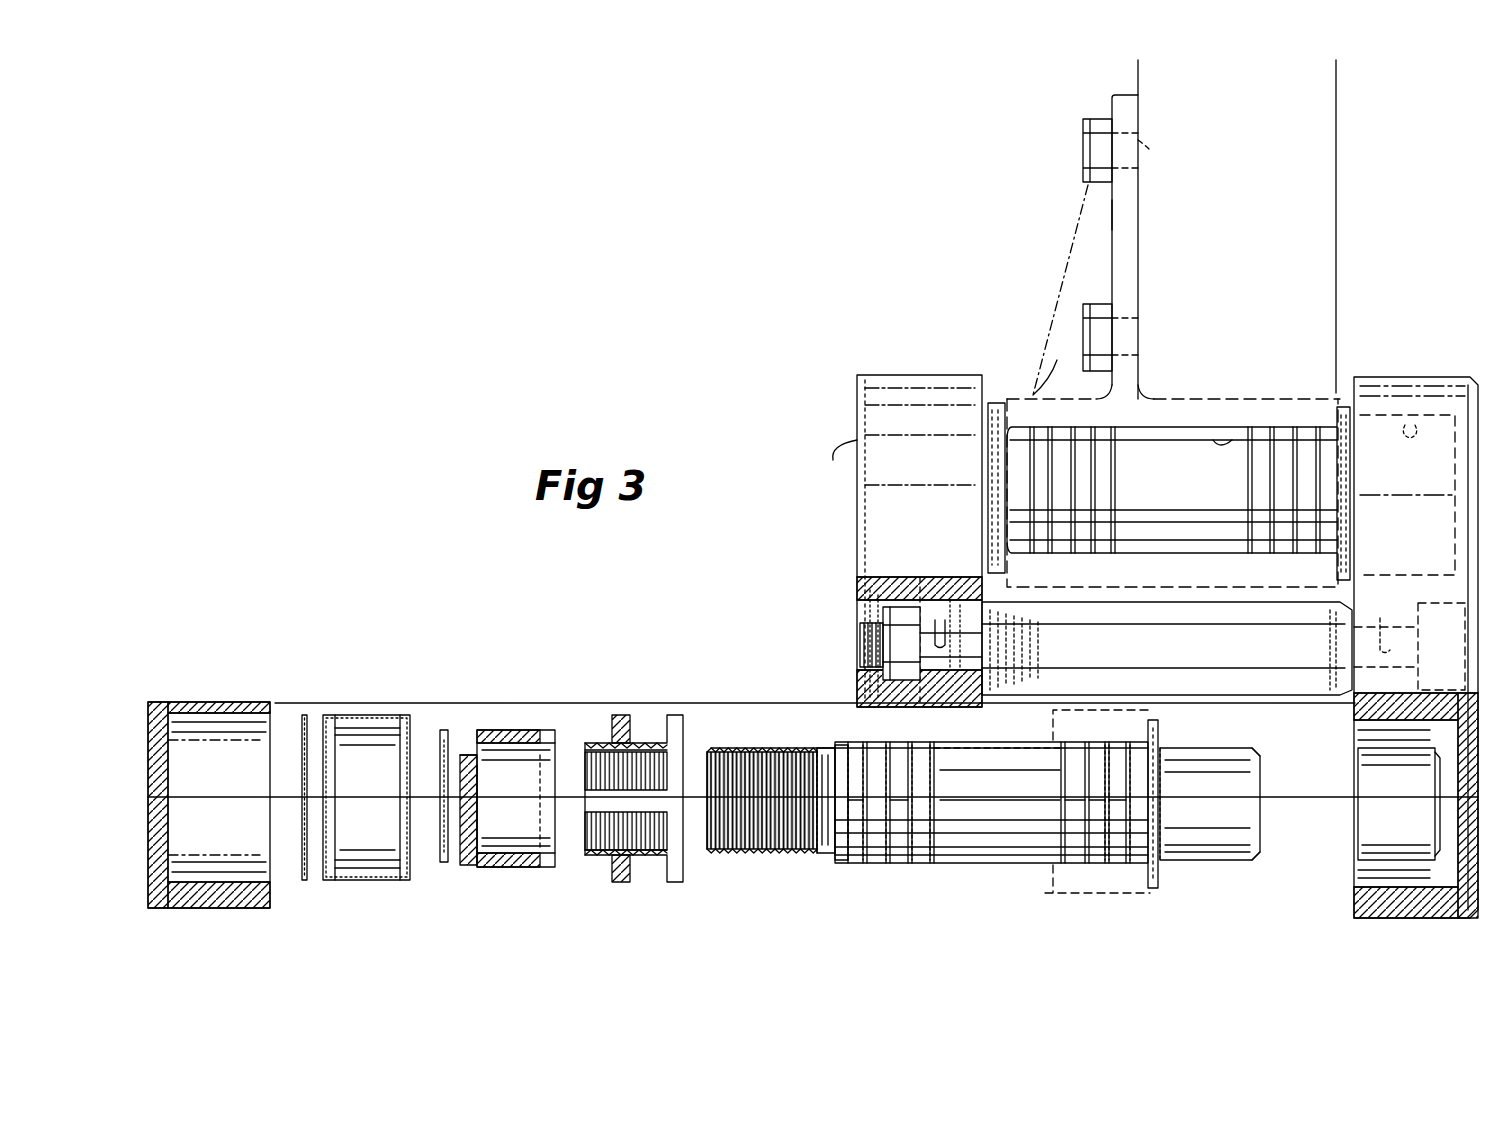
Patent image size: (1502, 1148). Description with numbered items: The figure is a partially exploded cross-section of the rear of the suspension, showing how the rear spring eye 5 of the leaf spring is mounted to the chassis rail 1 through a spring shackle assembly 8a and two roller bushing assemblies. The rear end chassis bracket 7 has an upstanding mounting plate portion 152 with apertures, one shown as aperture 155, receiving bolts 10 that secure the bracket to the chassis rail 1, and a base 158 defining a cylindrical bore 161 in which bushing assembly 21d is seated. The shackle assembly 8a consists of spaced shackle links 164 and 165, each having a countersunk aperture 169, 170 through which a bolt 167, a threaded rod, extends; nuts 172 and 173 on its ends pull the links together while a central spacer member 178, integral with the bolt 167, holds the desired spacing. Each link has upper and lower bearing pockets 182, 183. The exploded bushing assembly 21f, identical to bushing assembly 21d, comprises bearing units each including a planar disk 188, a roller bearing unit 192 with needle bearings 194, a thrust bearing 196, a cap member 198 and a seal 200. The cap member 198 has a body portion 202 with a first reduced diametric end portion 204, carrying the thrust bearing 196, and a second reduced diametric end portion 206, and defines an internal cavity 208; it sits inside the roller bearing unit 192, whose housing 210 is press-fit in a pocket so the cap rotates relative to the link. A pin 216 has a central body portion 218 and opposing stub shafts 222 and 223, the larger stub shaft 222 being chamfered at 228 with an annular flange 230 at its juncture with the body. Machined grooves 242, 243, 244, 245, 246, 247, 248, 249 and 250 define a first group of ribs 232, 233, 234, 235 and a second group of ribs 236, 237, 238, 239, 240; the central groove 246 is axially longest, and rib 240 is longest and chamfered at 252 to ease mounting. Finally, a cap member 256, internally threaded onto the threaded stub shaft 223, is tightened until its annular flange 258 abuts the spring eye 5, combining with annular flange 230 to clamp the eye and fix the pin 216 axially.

The chassis rail 1 is at (1338, 173).
The rear spring eye 5 is at (1153, 890).
The rear end chassis bracket 7 is at (1112, 216).
The spring shackle assembly 8a is at (833, 461).
The bolts 10 is at (1083, 130).
The bushing assembly 21d is at (1235, 433).
The bushing assembly 21f is at (728, 752).
The upstanding mounting plate portion 152 is at (1112, 110).
The aperture 155 is at (1148, 150).
The base 158 is at (1057, 399).
The cylindrical bore 161 is at (1213, 440).
The shackle link 164 is at (1455, 380).
The shackle link 165 is at (857, 410).
The bolt 167 is at (868, 645).
The countersunk aperture 169 is at (1409, 639).
The countersunk aperture 170 is at (944, 632).
The nut 172 is at (1362, 710).
The nut 173 is at (895, 620).
The central spacer member 178 is at (1092, 658).
The upper bearing pocket 182 is at (1410, 425).
The lower bearing pocket 183 is at (272, 885).
The planar disk 188 is at (305, 880).
The roller bearing unit 192 is at (370, 712).
The needle bearings 194 is at (400, 872).
The thrust bearing 196 is at (443, 728).
The cap member 198 is at (500, 716).
The seal 200 is at (622, 882).
The body portion 202 is at (520, 740).
The first reduced diametric end portion 204 is at (450, 863).
The second reduced diametric end portion 206 is at (545, 855).
The internal cavity 208 is at (560, 862).
The housing 210 is at (375, 705).
The pin 216 is at (1196, 873).
The central body portion 218 is at (960, 864).
The stub shaft 222 is at (1224, 803).
The stub shaft 223 is at (762, 850).
The chamfer 228 is at (1264, 752).
The annular flange 230 is at (1166, 866).
The rib 232 is at (1110, 744).
The rib 233 is at (1107, 864).
The rib 234 is at (1062, 864).
The rib 235 is at (1063, 772).
The rib 236 is at (930, 744).
The rib 237 is at (915, 744).
The rib 238 is at (888, 864).
The rib 239 is at (850, 744).
The rib 240 is at (840, 744).
The groove 242 is at (1150, 752).
The groove 243 is at (1127, 864).
The groove 244 is at (1086, 864).
The groove 245 is at (1078, 800).
The central groove 246 is at (1058, 712).
The groove 247 is at (932, 864).
The groove 248 is at (906, 866).
The groove 249 is at (865, 864).
The groove 250 is at (822, 860).
The chamfer 252 is at (838, 745).
The cap member 256 is at (590, 712).
The annular flange 258 is at (656, 740).